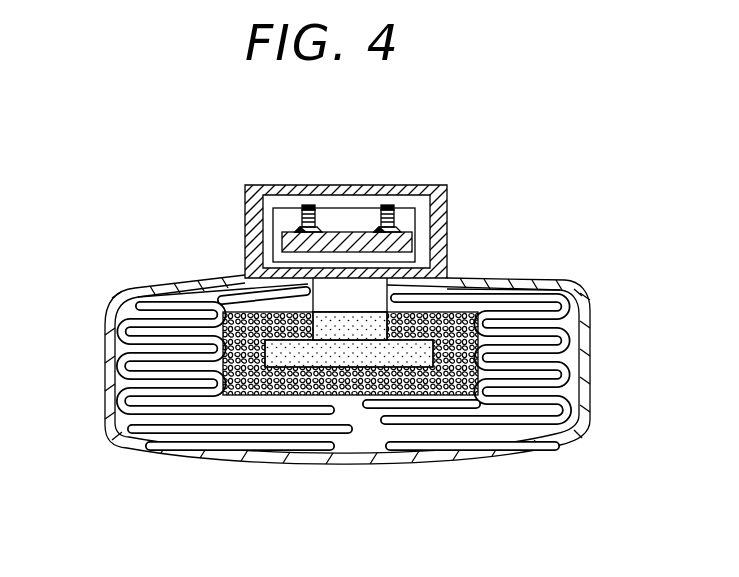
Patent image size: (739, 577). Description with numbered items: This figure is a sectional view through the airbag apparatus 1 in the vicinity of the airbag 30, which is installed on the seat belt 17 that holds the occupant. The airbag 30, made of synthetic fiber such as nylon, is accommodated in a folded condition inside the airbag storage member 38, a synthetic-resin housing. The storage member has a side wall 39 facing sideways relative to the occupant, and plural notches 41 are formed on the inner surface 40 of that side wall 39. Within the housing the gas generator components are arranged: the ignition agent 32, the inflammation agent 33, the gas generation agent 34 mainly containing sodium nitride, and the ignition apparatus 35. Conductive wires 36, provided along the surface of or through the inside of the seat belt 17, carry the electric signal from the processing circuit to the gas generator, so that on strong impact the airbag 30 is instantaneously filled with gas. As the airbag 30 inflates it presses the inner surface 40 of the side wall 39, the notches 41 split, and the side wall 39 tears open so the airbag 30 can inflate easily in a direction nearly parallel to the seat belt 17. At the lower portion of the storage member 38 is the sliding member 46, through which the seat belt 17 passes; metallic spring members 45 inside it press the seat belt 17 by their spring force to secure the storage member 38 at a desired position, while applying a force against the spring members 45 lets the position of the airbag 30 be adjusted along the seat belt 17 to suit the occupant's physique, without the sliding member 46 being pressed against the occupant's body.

The airbag apparatus 1 is at (519, 148).
The seat belt 17 is at (403, 243).
The airbag 30 is at (562, 418).
The ignition agent 32 is at (375, 318).
The inflammation agent 33 is at (340, 392).
The gas generation agent 34 is at (380, 392).
The ignition apparatus 35 is at (226, 274).
The conductive wires 36 is at (380, 207).
The airbag storage member 38 is at (572, 292).
The side wall 39 is at (107, 333).
The inner surface 40 is at (117, 411).
The notches 41 is at (108, 354).
The spring members 45 is at (300, 228).
The sliding member 46 is at (410, 194).